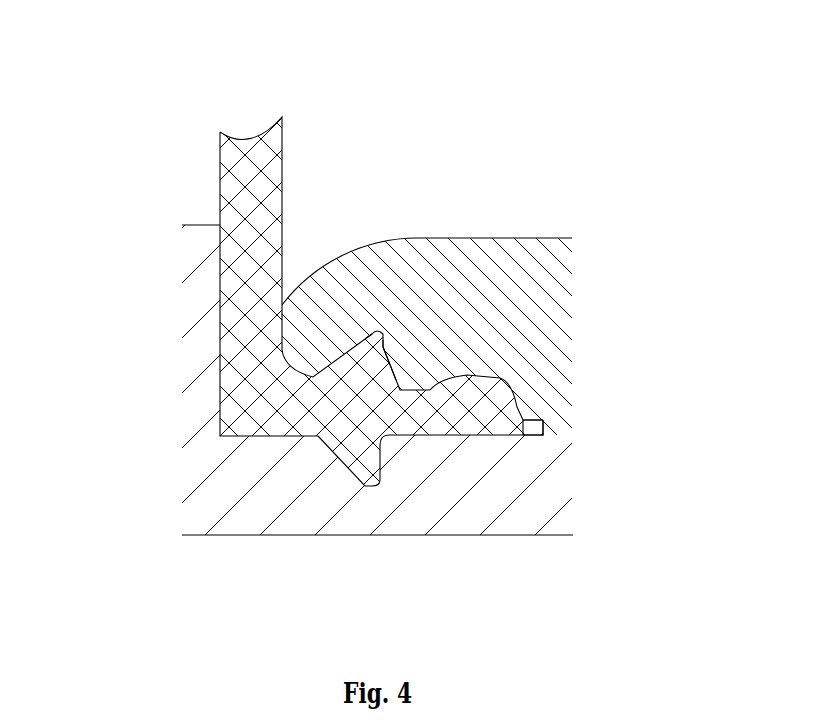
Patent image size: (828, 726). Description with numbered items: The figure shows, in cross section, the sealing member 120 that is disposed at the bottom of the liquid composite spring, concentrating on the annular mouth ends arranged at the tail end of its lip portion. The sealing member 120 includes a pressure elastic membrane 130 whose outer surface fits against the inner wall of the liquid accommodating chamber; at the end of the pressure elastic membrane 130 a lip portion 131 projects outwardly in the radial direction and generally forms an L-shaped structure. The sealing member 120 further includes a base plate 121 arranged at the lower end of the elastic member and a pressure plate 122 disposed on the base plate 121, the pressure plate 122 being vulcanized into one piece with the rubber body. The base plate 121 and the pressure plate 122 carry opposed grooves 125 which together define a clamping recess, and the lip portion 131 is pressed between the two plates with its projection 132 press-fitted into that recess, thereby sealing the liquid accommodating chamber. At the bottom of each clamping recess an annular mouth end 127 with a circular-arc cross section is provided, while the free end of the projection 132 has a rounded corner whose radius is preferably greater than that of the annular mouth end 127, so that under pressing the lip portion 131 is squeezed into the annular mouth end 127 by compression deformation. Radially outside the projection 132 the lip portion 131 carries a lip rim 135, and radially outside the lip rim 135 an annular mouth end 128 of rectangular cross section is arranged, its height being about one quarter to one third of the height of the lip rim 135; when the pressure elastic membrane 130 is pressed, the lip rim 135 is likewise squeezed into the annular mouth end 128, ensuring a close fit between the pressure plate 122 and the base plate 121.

The sealing member 120 is at (110, 45).
The base plate 121 is at (230, 465).
The pressure plate 122 is at (403, 308).
The groove 125 is at (380, 338).
The annular mouth end 127 is at (377, 337).
The annular mouth end 128 is at (537, 417).
The pressure elastic membrane 130 is at (240, 270).
The lip portion 131 is at (315, 395).
The projection 132 is at (357, 430).
The lip rim 135 is at (480, 413).